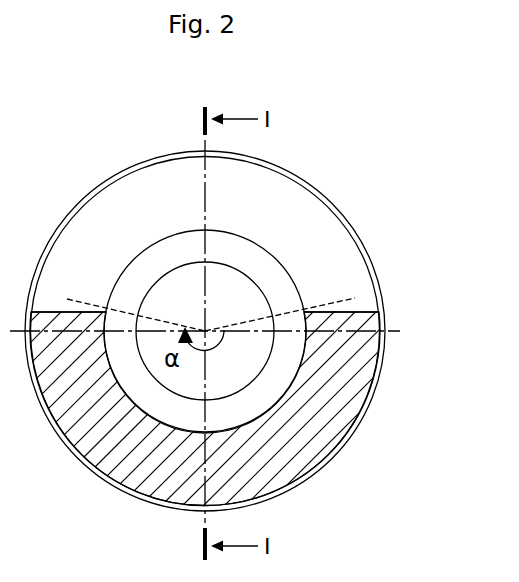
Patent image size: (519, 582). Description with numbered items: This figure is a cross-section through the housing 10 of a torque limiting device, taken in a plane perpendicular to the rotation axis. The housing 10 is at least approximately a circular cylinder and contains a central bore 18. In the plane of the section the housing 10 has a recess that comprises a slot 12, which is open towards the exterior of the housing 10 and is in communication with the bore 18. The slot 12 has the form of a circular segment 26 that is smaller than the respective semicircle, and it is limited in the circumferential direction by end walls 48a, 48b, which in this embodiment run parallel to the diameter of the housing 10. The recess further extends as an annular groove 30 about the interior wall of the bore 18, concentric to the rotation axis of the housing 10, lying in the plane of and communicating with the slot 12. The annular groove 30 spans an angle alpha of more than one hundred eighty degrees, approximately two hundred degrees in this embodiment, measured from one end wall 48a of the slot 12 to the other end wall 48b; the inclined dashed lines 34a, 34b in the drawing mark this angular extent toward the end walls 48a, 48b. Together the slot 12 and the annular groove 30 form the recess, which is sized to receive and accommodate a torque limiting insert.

The housing 10 is at (327, 465).
The slot 12 is at (320, 238).
The bore 18 is at (250, 360).
The circular segment 26 is at (297, 218).
The annular groove 30 is at (287, 352).
The inclined flank 34a is at (292, 303).
The inclined flank 34b is at (125, 307).
The end wall 48a is at (362, 312).
The end wall 48b is at (60, 310).